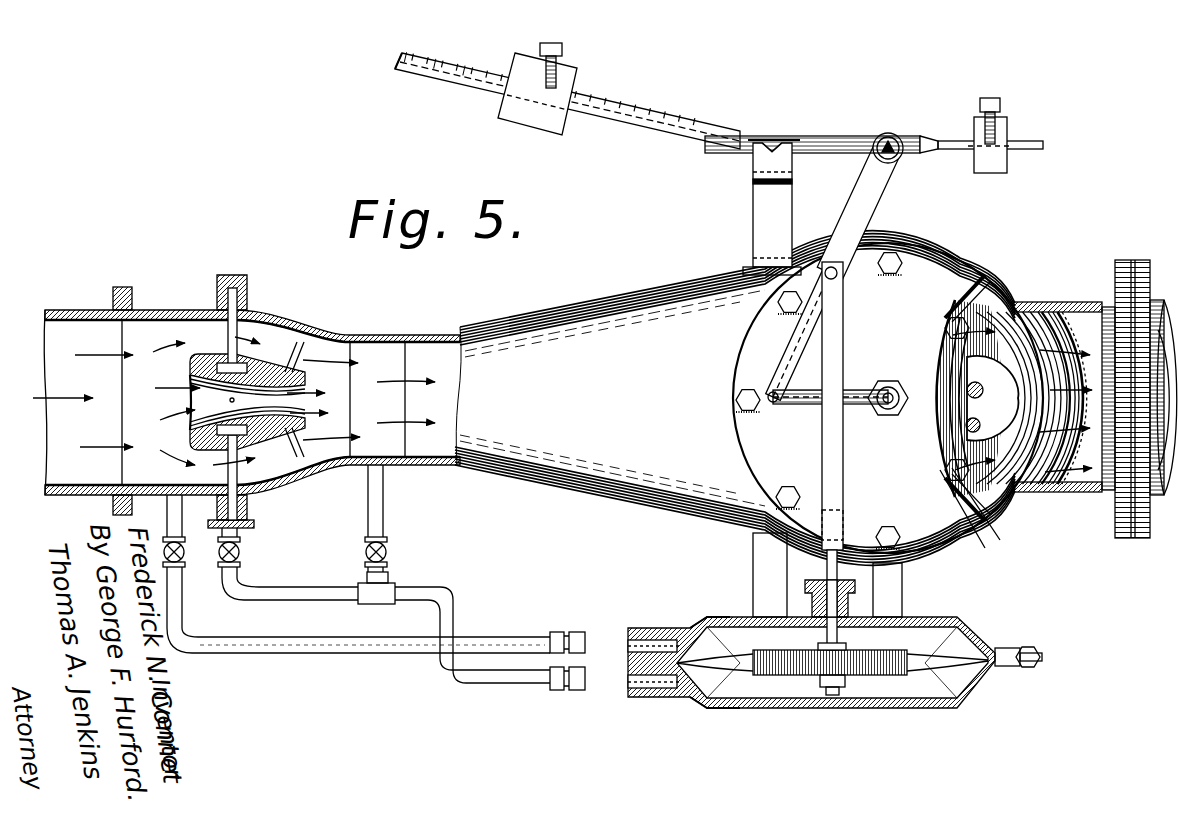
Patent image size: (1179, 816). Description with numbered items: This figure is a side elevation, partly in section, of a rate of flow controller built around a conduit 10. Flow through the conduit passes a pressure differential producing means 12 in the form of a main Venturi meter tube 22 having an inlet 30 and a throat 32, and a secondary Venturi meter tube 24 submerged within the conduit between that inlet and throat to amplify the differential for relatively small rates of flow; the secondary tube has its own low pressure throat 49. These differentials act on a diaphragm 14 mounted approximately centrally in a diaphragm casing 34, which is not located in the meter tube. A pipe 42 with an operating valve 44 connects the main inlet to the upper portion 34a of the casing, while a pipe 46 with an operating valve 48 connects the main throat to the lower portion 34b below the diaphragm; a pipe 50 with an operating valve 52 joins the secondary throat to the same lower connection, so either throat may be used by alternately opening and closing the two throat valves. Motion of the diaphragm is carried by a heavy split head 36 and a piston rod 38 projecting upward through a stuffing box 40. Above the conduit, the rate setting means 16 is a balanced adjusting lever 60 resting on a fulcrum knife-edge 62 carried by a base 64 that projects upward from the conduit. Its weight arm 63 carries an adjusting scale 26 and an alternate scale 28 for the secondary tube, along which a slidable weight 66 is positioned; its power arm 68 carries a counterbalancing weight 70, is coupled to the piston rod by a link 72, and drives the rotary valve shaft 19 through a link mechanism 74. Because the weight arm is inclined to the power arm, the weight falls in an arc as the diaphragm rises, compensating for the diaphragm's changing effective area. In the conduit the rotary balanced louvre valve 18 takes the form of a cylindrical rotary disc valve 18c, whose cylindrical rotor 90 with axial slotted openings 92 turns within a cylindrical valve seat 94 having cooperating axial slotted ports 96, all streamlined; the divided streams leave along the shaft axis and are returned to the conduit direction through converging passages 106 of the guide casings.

The conduit 10 is at (86, 336).
The pressure differential producing means 12 is at (205, 303).
The diaphragm 14 is at (690, 706).
The rate setting means 16 is at (430, 50).
The rotary balanced louvre valve 18 is at (962, 498).
The cylindrical rotary disc valve 18c is at (1003, 512).
The rotary louvre valve shaft 19 is at (886, 412).
The main Venturi meter tube 22 is at (280, 335).
The secondary Venturi meter tube 24 is at (212, 362).
The adjusting scale 26 is at (475, 70).
The alternate scale 28 is at (440, 82).
The inlet 30 is at (148, 477).
The throat 32 is at (366, 352).
The diaphragm casing 34 is at (966, 700).
The upper portion of diaphragm casing 34a is at (676, 630).
The lower portion of diaphragm casing 34b is at (648, 694).
The split head 36 is at (858, 668).
The piston rod 38 is at (828, 582).
The stuffing box 40 is at (808, 600).
The pipe 42 is at (262, 648).
The operating valve 44 is at (182, 562).
The pipe 46 is at (478, 683).
The operating valve 48 is at (390, 552).
The throat of secondary Venturi meter tube 49 is at (228, 401).
The pipe 50 is at (284, 597).
The operating valve 52 is at (241, 552).
The balanced adjusting lever 60 is at (745, 136).
The fulcrum knife-edge 62 is at (778, 140).
The weight arm 63 is at (610, 110).
The base 64 is at (765, 198).
The slidable weight 66 is at (512, 110).
The power arm 68 is at (838, 134).
The counterbalancing weight 70 is at (1002, 120).
The link 72 is at (872, 212).
The link mechanism 74 is at (800, 392).
The cylindrical rotor 90 is at (948, 520).
The axial slotted openings 92 is at (965, 414).
The cylindrical valve seat 94 is at (968, 312).
The axial slotted ports 96 is at (960, 380).
The passages 106 is at (1030, 312).